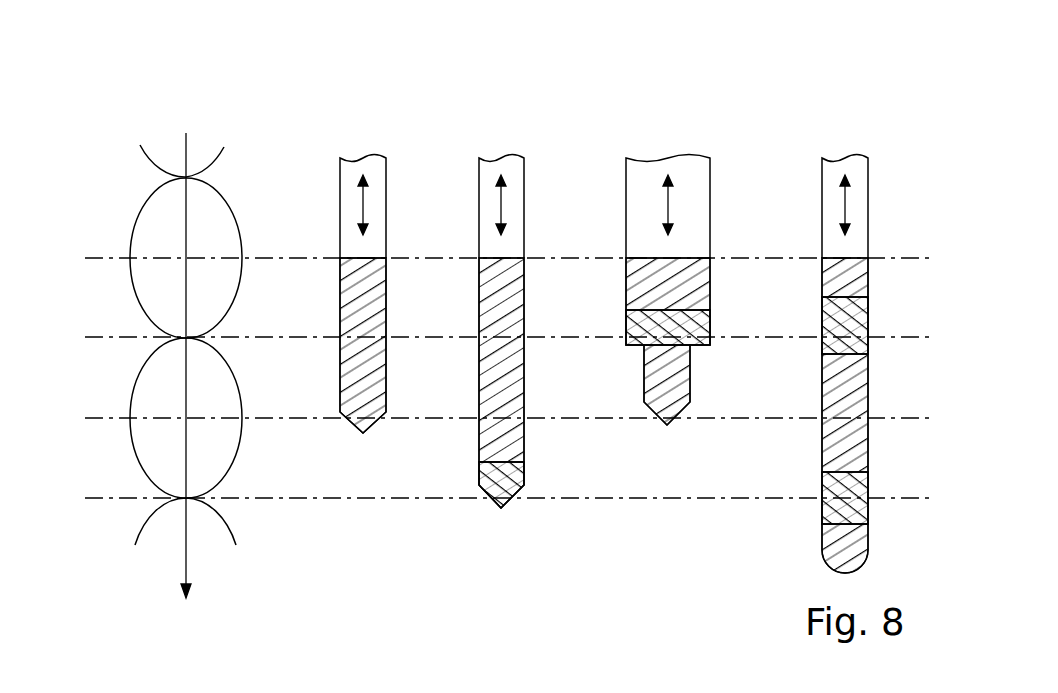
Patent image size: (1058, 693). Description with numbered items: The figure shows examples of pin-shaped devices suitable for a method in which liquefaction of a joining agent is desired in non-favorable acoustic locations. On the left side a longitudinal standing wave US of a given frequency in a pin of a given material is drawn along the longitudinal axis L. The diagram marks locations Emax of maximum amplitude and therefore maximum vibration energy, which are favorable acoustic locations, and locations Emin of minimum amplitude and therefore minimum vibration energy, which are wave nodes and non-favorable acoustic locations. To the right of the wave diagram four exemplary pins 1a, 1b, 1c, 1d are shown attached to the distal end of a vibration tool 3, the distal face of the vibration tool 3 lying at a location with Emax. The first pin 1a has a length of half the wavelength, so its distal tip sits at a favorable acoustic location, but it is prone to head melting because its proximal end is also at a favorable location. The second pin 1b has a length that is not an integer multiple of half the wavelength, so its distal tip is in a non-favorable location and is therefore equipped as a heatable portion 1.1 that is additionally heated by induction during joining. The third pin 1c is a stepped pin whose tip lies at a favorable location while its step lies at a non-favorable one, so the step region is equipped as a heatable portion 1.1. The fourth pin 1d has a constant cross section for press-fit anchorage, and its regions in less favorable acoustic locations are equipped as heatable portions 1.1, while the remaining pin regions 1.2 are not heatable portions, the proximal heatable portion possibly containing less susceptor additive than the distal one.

The longitudinal standing wave US is at (230, 204).
The longitudinal axis L is at (170, 374).
The location of maximum amplitude Emax is at (487, 340).
The location of minimum amplitude Emin is at (487, 420).
The vibration tool 3 is at (353, 202).
The first pin 1a is at (330, 280).
The second pin 1b is at (468, 280).
The third pin 1c is at (614, 280).
The fourth pin 1d is at (804, 280).
The heatable portion 1.1 is at (520, 479).
The hard tool section (cutting material) 1.2 is at (500, 387).